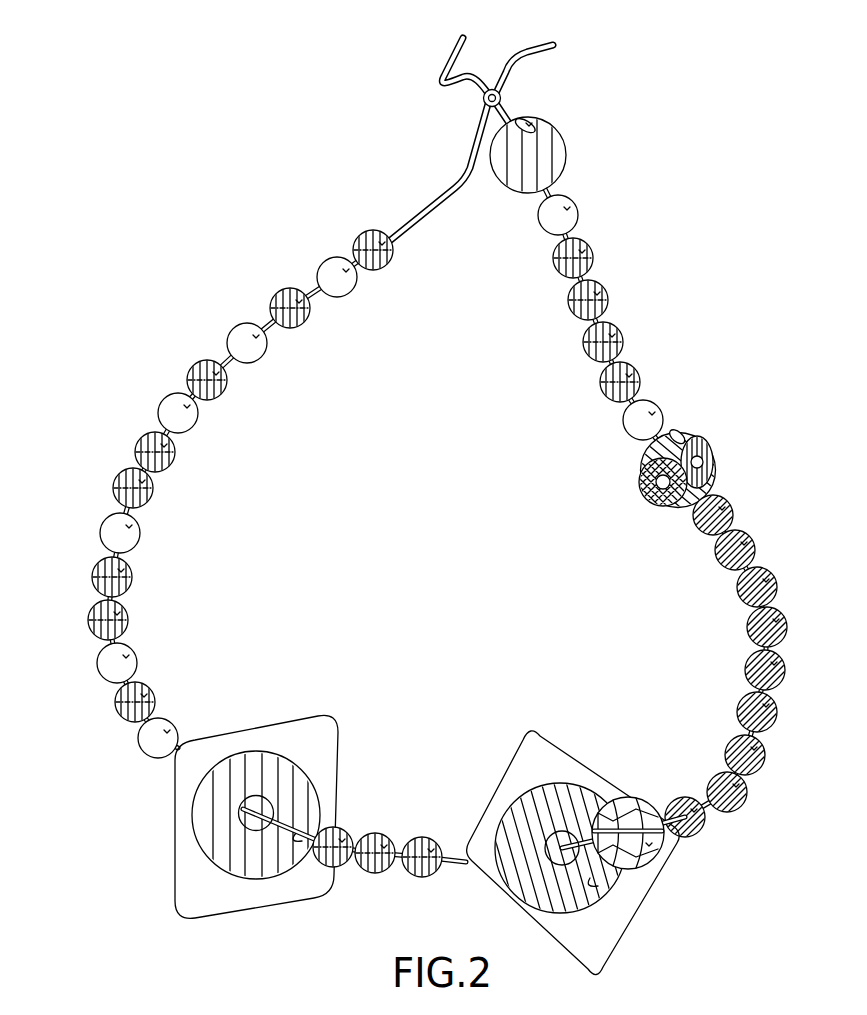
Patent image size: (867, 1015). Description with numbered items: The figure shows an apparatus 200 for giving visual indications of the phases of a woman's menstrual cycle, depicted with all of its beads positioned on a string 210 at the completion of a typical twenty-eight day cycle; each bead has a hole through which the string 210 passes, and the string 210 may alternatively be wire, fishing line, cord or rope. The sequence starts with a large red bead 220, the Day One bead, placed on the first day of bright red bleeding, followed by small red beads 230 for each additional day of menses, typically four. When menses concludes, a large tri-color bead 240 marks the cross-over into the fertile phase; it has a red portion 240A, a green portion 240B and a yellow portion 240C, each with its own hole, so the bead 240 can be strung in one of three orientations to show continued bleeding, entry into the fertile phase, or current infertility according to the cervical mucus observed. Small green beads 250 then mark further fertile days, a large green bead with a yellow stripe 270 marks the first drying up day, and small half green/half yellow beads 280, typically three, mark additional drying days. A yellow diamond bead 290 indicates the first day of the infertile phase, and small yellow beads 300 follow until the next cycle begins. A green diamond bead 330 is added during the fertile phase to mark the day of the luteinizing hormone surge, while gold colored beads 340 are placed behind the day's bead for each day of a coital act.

The apparatus 200 is at (318, 150).
The string 210 is at (438, 65).
The large red bead 220 is at (564, 131).
The small red beads 230 is at (636, 364).
The large tri-color bead 240 is at (660, 470).
The red portion 240A is at (716, 460).
The green portion 240B is at (692, 438).
The yellow portion 240C is at (652, 500).
The small green beads 250 is at (732, 738).
The large green bead with yellow stripe 270 is at (628, 796).
The small half green/half yellow beads 280 is at (422, 836).
The yellow diamond bead 290 is at (325, 732).
The small yellow beads 300 is at (390, 262).
The green diamond bead 330 is at (632, 915).
The gold colored bead 340 is at (324, 262).